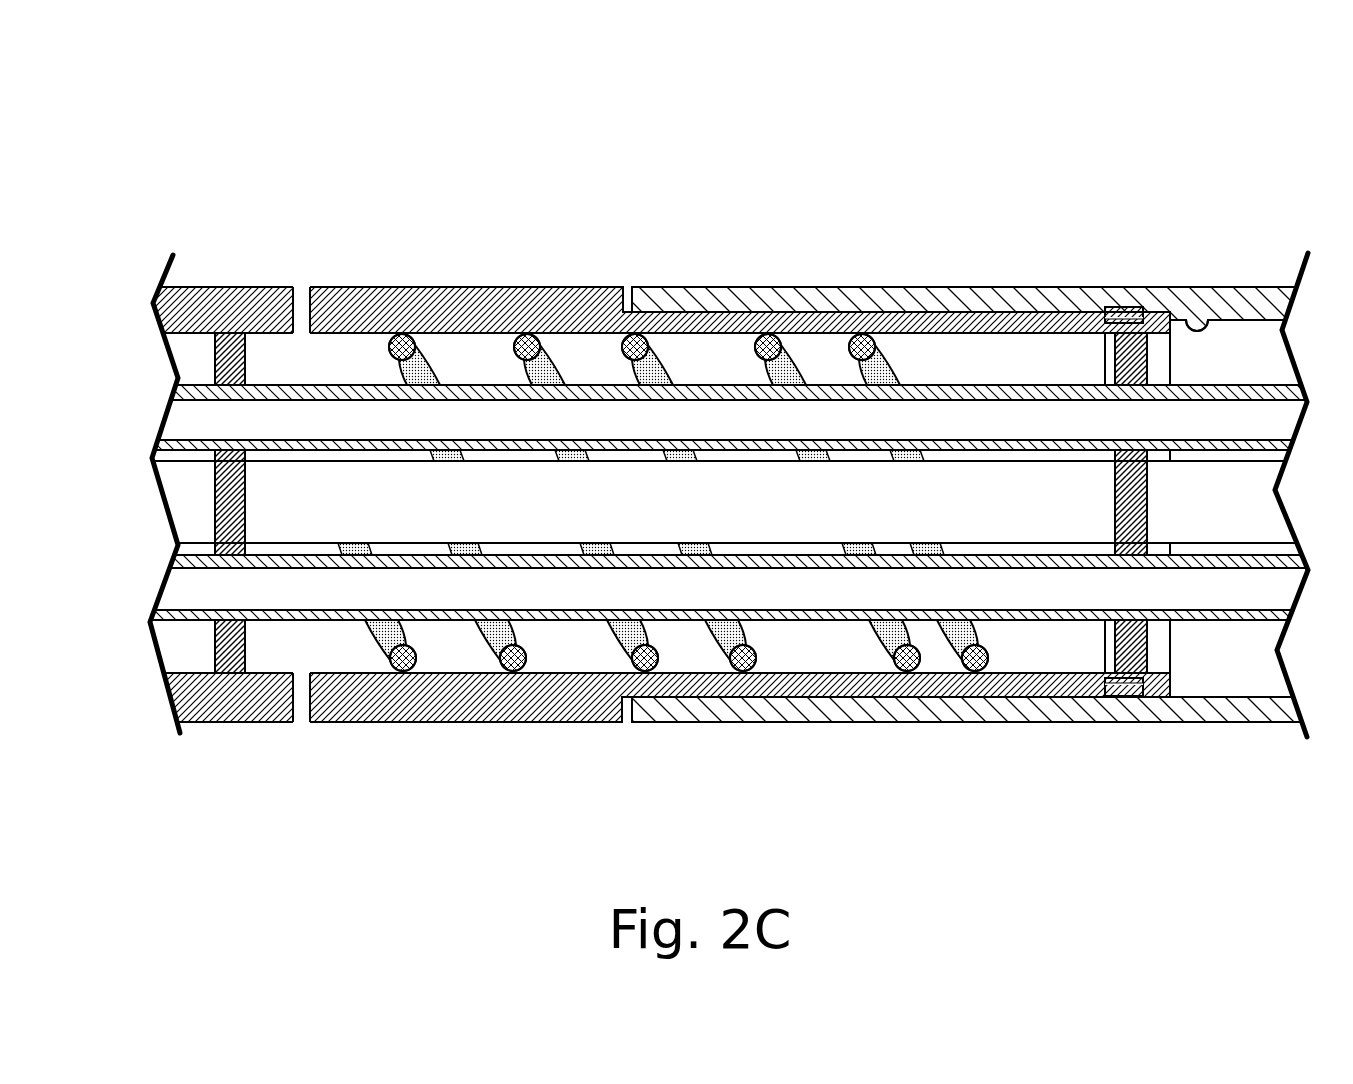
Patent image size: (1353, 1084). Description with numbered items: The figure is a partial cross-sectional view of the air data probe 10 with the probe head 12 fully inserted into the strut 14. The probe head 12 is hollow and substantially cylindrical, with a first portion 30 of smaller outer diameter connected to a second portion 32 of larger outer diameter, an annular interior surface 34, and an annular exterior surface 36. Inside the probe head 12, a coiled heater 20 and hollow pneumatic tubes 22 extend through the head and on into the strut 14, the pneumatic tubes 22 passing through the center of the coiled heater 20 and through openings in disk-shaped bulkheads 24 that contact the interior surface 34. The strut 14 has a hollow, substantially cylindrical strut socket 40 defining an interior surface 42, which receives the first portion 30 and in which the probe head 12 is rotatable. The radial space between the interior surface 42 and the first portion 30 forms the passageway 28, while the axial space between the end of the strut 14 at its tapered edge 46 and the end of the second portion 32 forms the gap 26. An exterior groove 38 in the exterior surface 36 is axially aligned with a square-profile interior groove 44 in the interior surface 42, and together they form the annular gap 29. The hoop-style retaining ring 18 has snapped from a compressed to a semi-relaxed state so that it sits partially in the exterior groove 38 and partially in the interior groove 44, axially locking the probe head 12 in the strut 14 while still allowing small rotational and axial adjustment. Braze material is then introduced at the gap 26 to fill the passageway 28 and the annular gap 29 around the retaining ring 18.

The air data probe 10 is at (186, 127).
The probe head 12 is at (297, 249).
The strut 14 is at (1199, 266).
The retaining ring 18 is at (1110, 313).
The heater 20 is at (493, 638).
The pneumatic tubes 22 is at (274, 595).
The bulkheads 24 is at (226, 496).
The gap 26 is at (625, 300).
The passageway 28 is at (778, 320).
The annular gap 29 is at (1113, 693).
The first portion 30 is at (853, 322).
The second portion 32 is at (413, 312).
The interior surface 34 is at (782, 673).
The exterior surface 36 is at (980, 303).
The exterior groove 38 is at (1142, 317).
The strut socket 40 is at (1180, 700).
The interior surface 42 is at (1200, 325).
The interior groove 44 is at (1122, 305).
The tapered edge 46 is at (625, 700).